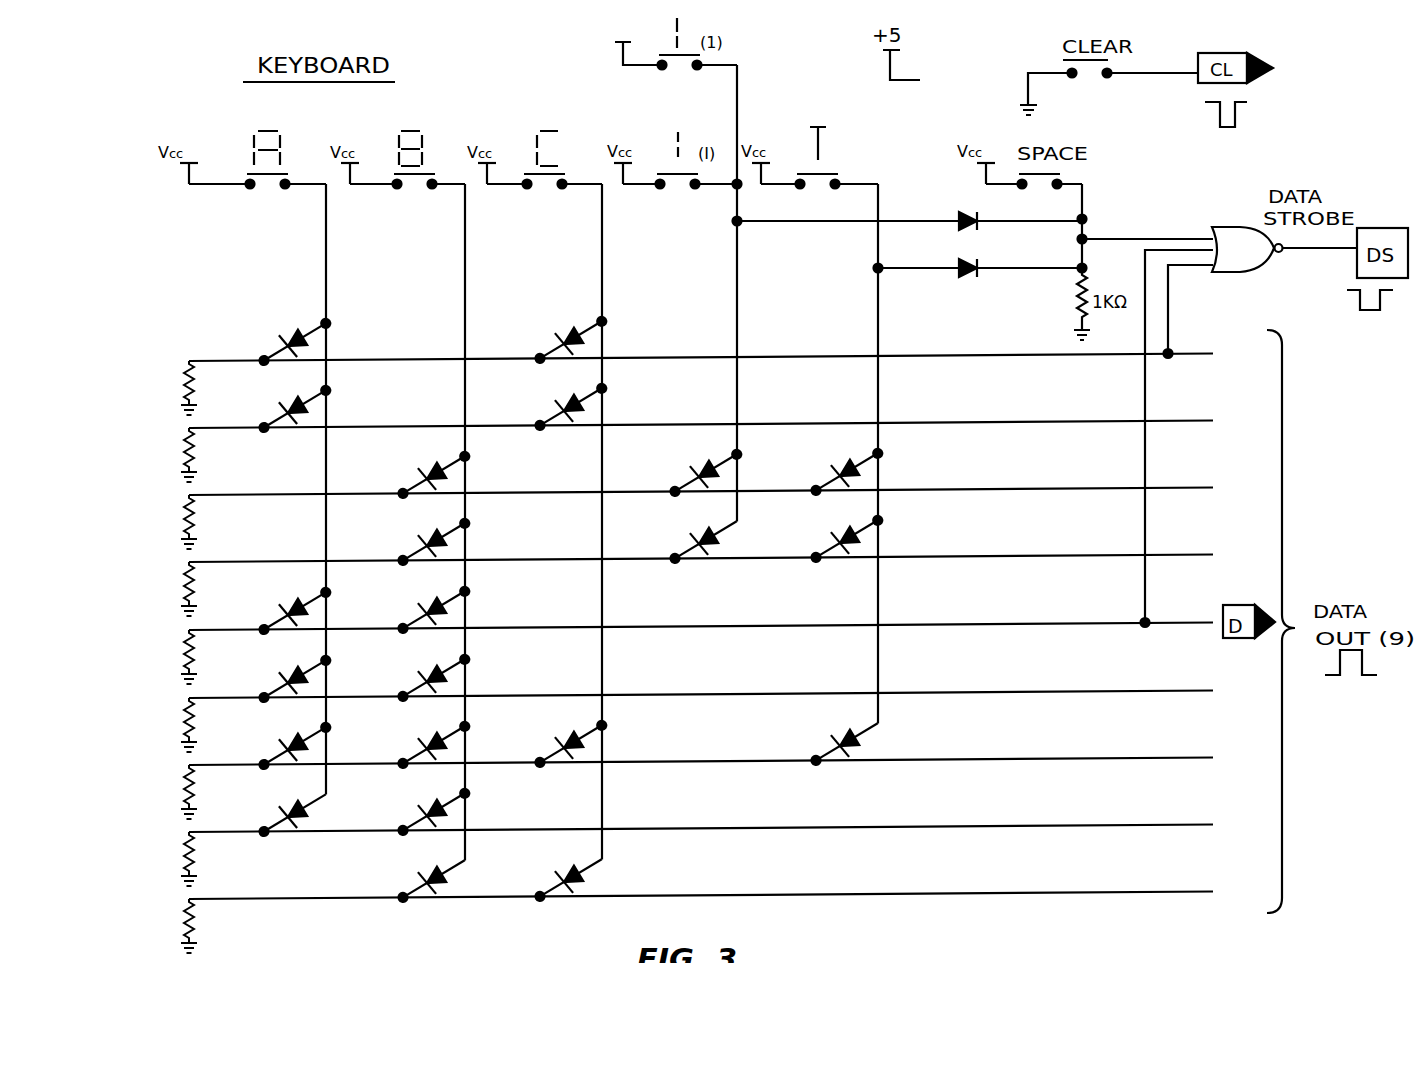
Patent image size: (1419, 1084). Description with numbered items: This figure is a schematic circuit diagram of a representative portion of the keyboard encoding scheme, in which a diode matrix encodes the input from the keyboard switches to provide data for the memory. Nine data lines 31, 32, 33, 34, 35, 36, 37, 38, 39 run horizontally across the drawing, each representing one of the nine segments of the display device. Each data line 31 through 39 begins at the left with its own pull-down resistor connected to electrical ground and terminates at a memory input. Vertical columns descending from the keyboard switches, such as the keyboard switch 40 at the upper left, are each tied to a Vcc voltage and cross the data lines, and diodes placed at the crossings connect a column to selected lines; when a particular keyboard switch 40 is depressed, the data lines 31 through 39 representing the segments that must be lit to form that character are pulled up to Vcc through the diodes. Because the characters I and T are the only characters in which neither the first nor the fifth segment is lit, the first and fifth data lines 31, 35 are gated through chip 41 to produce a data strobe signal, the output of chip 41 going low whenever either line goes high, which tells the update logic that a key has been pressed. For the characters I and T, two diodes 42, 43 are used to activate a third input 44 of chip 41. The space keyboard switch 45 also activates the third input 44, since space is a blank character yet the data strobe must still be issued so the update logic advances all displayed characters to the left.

The data line 31 is at (184, 388).
The data line 32 is at (188, 455).
The data line 33 is at (191, 522).
The data line 34 is at (192, 589).
The data line 35 is at (190, 657).
The data line 36 is at (196, 725).
The data line 37 is at (194, 792).
The data line 38 is at (198, 859).
The data line 39 is at (198, 926).
The keyboard key switch 40 is at (283, 134).
The chip 41 is at (1217, 227).
The diode 42 is at (909, 212).
The diode 43 is at (978, 261).
The third input 44 is at (1147, 229).
The space keyboard switch 45 is at (1059, 163).